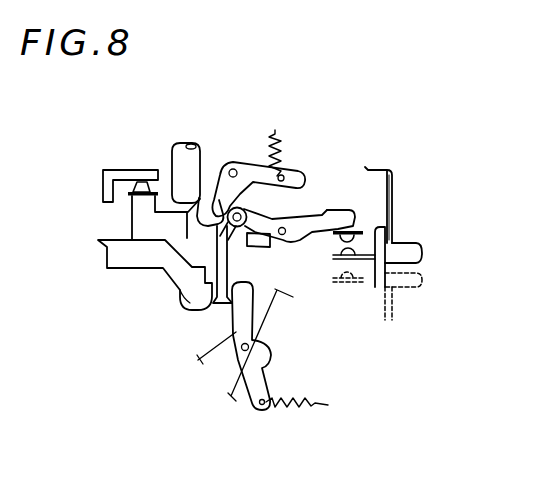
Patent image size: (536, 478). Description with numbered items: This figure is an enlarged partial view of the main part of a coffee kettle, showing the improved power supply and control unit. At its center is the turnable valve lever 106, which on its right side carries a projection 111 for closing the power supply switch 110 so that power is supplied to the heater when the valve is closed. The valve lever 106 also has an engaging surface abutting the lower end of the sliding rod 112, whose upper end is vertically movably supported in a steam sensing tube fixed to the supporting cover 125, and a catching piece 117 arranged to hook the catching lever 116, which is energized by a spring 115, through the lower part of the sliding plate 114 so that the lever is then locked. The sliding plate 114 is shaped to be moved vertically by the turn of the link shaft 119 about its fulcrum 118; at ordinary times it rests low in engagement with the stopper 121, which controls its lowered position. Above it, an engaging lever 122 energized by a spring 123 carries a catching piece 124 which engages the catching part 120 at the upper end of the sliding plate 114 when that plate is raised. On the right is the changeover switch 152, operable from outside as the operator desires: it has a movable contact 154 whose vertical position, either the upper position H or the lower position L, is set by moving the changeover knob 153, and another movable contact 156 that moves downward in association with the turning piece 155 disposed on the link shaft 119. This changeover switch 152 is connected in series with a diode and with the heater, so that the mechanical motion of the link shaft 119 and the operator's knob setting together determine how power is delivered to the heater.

The valve lever 106 is at (130, 268).
The power supply switch 110 is at (125, 192).
The projection 111 is at (138, 218).
The sliding rod 112 is at (178, 165).
The sliding plate 114 is at (217, 307).
The spring 115 is at (283, 407).
The catching lever 116 is at (240, 368).
The catching piece 117 is at (180, 297).
The fulcrum 118 is at (340, 212).
The link shaft 119 is at (268, 218).
The catching part 120 is at (228, 222).
The stopper 121 is at (262, 244).
The engaging lever 122 is at (243, 168).
The spring 123 is at (278, 152).
The catching piece 124 is at (211, 212).
The supporting cover 125 is at (391, 210).
The changeover switch 152 is at (389, 241).
The changeover knob 153 is at (387, 264).
The movable contact 154 is at (387, 273).
The turning piece 155 is at (352, 229).
The movable contact 156 is at (391, 200).
The upper position H is at (410, 253).
The lower position L is at (393, 288).